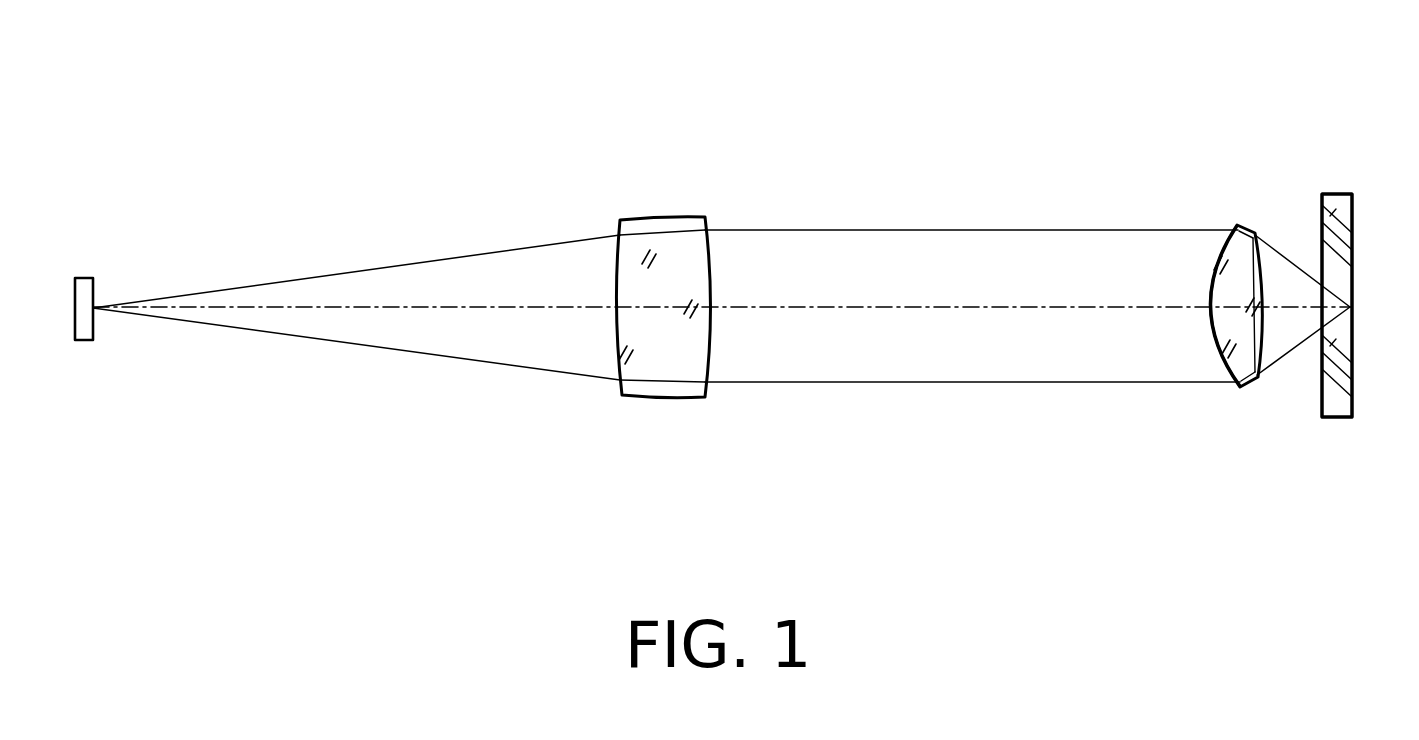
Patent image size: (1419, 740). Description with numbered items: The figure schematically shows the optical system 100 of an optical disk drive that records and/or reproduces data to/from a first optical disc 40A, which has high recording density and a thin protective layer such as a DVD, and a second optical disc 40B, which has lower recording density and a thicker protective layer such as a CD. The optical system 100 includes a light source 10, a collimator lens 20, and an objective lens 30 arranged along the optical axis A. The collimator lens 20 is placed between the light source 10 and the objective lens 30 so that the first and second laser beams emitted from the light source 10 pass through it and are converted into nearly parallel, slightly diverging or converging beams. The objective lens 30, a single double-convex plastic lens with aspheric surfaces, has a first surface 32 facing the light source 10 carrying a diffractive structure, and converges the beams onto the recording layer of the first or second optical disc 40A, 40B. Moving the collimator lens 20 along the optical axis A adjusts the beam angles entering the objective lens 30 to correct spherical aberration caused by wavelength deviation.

The optical system 100 is at (788, 126).
The light source 10 is at (84, 282).
The collimator lens 20 is at (676, 226).
The objective lens 30 is at (1243, 228).
The first surface 32 is at (1214, 362).
The first optical disc 40A is at (1338, 405).
The second optical disc 40B is at (1337, 305).
The optical axis A is at (782, 306).